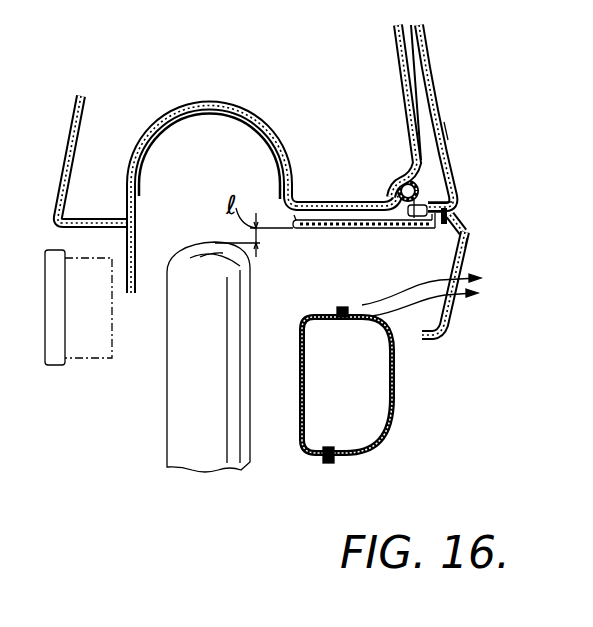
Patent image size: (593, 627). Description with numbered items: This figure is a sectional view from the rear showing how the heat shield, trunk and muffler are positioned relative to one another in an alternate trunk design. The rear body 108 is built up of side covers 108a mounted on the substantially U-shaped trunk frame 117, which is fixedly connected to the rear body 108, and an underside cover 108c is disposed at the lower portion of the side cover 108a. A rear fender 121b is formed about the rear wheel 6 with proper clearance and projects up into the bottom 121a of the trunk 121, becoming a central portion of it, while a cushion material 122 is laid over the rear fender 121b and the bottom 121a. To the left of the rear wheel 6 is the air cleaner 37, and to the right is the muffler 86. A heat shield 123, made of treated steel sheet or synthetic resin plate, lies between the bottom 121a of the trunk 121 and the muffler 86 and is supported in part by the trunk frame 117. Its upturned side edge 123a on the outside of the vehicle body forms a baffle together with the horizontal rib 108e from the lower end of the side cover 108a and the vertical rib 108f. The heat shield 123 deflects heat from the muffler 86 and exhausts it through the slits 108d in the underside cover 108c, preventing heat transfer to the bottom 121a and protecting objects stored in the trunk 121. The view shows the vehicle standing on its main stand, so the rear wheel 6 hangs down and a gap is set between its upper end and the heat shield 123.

The rear wheel 6 is at (187, 410).
The air cleaner 37 is at (76, 358).
The muffler 86 is at (392, 396).
The rear body 108 is at (437, 78).
The side cover 108a is at (447, 128).
The underside cover 108c is at (470, 222).
The slits 108d is at (466, 265).
The horizontal rib 108e is at (438, 203).
The vertical rib 108f is at (469, 236).
The trunk frame 117 is at (404, 178).
The trunk 121 is at (413, 60).
The bottom of trunk 121a is at (341, 220).
The rear fender 121b is at (212, 110).
The cushion material 122 is at (330, 199).
The heat shield 123 is at (307, 229).
The upturned side edge 123a is at (455, 213).